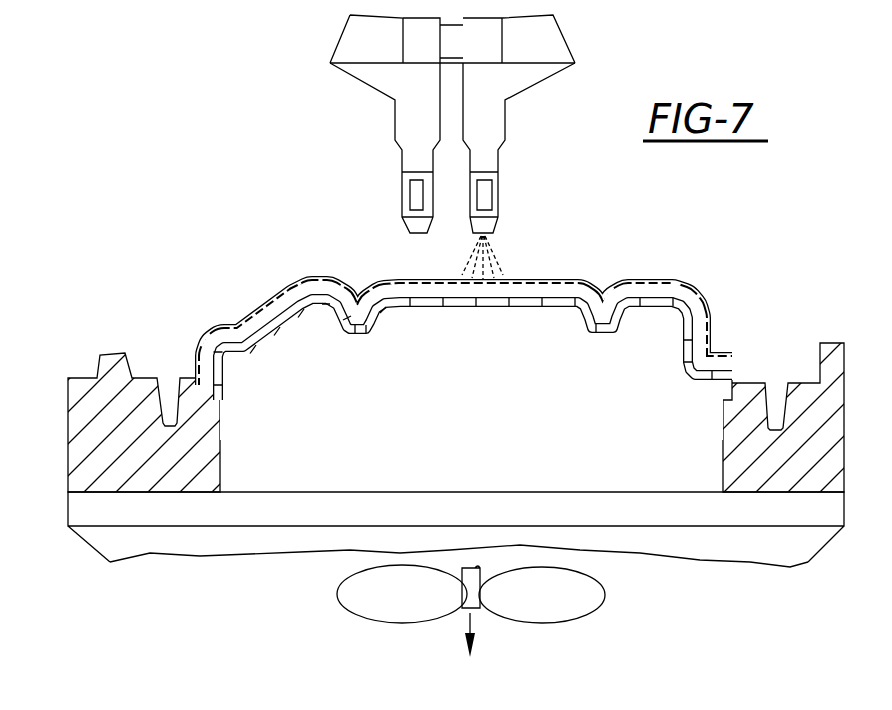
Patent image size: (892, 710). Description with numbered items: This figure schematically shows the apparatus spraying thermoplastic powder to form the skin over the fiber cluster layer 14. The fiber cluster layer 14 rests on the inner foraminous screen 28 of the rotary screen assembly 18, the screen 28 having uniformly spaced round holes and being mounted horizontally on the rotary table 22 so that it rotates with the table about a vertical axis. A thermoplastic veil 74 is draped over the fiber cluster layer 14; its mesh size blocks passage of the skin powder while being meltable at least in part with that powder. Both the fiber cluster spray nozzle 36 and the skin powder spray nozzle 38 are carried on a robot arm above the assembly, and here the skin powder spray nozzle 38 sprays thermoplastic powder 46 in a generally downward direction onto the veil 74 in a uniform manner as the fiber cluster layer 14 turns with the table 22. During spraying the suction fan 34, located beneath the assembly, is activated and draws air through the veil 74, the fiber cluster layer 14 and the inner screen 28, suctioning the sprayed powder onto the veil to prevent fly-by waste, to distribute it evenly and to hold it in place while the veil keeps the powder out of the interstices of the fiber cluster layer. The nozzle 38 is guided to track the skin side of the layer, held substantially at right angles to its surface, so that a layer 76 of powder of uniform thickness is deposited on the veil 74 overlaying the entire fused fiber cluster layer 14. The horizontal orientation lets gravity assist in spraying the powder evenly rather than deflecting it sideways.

The fiber cluster layer 14 is at (700, 343).
The rotary screen assembly 18 is at (60, 404).
The rotary table 22 is at (68, 462).
The inner foraminous screen 28 is at (482, 307).
The suction fan 34 is at (167, 545).
The fiber cluster spray nozzle 36 is at (402, 153).
The skin powder spray nozzle 38 is at (498, 160).
The thermoplastic powder 46 is at (493, 263).
The thermoplastic veil 74 is at (217, 323).
The layer of powder 76 is at (297, 280).